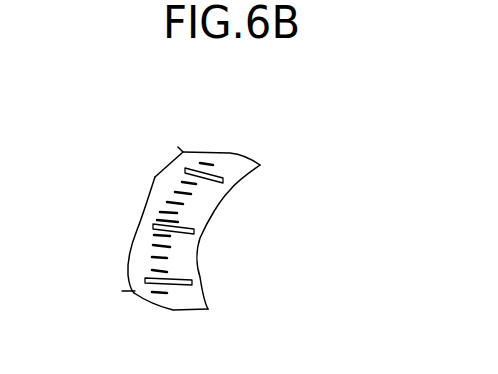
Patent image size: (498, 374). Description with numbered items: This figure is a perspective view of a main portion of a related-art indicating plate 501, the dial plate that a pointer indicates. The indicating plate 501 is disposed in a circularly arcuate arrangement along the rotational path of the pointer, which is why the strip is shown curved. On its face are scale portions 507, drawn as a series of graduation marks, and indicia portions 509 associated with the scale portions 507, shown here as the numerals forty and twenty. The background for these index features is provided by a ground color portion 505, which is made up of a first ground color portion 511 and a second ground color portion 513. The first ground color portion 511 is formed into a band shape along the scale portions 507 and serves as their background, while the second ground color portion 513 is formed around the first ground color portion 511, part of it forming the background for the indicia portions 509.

The indicating plate 501 is at (135, 299).
The ground color portion 505 is at (130, 101).
The scale portions 507 is at (157, 222).
The indicia portions 509 is at (257, 204).
The first ground color portion 511 is at (157, 178).
The second ground color portion 513 is at (218, 227).